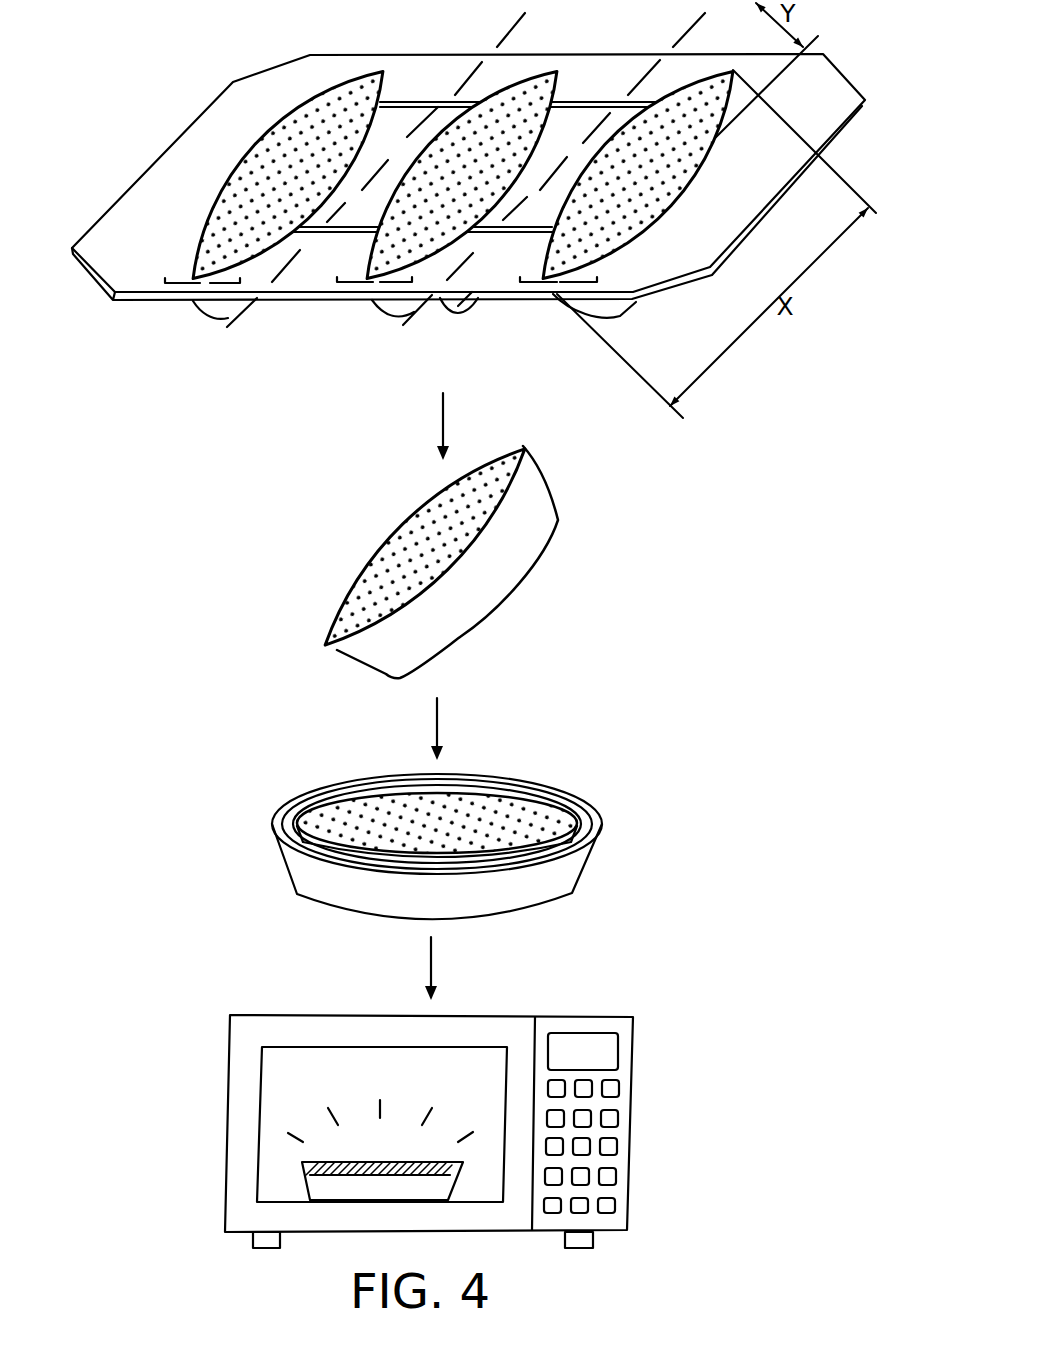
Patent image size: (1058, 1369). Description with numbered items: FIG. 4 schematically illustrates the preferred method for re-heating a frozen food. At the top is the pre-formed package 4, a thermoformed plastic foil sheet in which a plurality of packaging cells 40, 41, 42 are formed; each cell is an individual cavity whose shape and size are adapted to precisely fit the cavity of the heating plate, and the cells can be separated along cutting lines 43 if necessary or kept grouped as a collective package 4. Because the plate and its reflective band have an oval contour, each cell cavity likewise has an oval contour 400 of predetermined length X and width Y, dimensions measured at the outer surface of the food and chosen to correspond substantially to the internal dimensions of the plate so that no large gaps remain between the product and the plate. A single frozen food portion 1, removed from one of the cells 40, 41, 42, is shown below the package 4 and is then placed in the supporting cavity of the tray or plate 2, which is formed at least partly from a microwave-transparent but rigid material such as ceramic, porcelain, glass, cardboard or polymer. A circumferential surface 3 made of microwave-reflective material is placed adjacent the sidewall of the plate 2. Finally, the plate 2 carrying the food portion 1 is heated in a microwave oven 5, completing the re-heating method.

The oval contour 400 is at (313, 97).
The pre-formed package 4 is at (708, 282).
The packaging cell 40 is at (196, 301).
The packaging cell 41 is at (368, 300).
The packaging cell 42 is at (557, 295).
The cutting lines 43 is at (210, 342).
The food portion 1 is at (560, 486).
The plate 2 is at (612, 803).
The circumferential surface 3 is at (568, 875).
The microwave oven 5 is at (650, 1098).